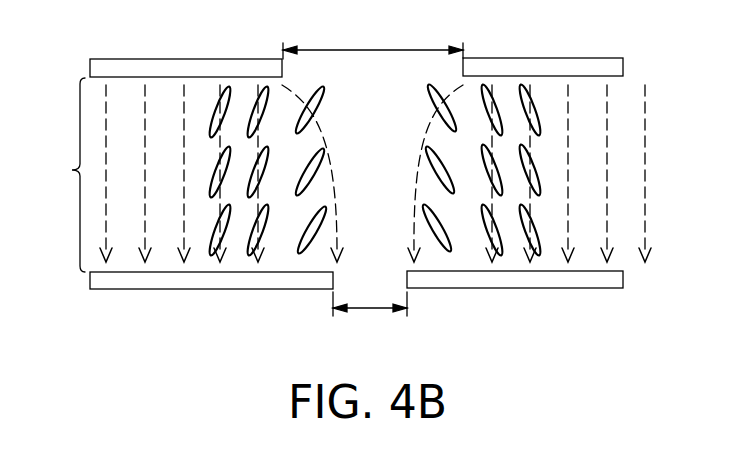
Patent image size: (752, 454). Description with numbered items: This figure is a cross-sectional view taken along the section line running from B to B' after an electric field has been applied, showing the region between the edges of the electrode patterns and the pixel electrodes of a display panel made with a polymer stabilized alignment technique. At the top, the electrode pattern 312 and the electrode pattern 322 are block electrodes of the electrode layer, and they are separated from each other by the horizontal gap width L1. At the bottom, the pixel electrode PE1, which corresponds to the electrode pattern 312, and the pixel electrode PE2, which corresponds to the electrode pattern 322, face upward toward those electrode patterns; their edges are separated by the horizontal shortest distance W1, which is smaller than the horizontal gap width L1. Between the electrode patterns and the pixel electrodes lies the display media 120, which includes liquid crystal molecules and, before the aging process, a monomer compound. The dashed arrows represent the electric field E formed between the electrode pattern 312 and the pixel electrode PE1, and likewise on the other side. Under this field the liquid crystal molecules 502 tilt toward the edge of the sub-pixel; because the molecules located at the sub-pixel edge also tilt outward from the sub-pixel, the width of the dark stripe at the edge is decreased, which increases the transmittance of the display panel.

The electrode pattern 312 is at (112, 66).
The electrode pattern 322 is at (618, 69).
The display media 120 is at (286, 175).
The liquid crystal molecules 502 is at (448, 237).
The pixel electrode PE1 is at (112, 282).
The pixel electrode PE2 is at (618, 280).
The electric field E is at (650, 198).
The horizontal gap width L1 is at (373, 37).
The horizontal shortest distance W1 is at (370, 295).
The section line endpoint B is at (84, 321).
The section line endpoint B' is at (630, 318).